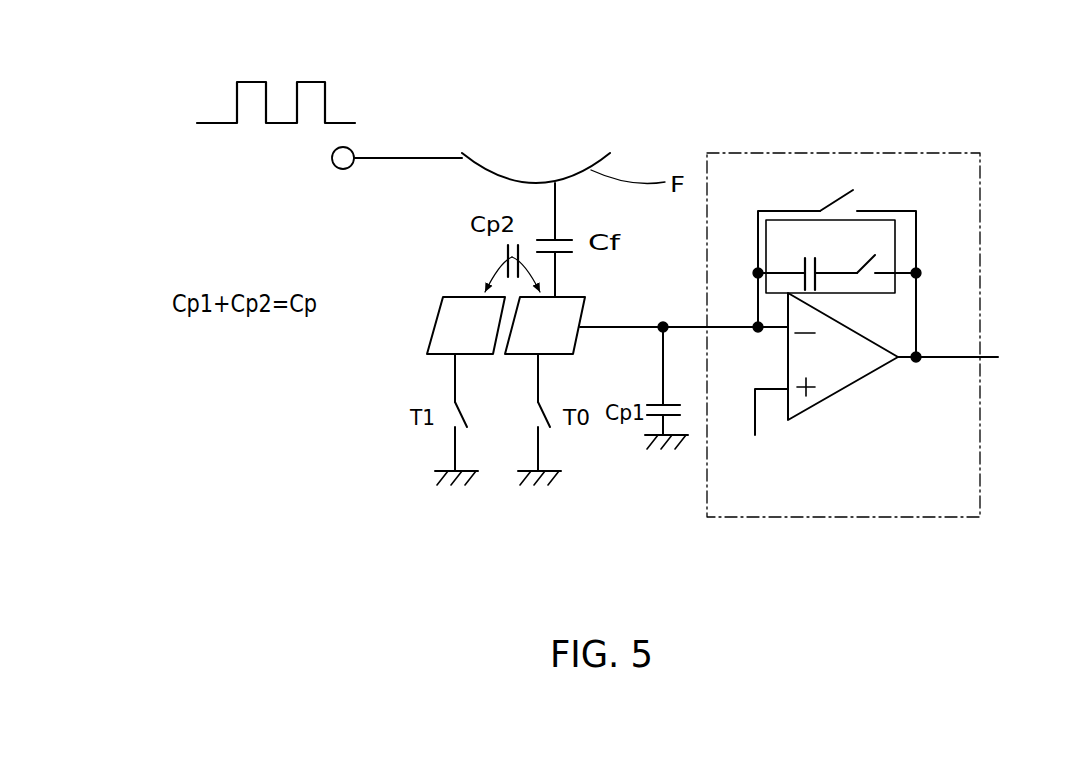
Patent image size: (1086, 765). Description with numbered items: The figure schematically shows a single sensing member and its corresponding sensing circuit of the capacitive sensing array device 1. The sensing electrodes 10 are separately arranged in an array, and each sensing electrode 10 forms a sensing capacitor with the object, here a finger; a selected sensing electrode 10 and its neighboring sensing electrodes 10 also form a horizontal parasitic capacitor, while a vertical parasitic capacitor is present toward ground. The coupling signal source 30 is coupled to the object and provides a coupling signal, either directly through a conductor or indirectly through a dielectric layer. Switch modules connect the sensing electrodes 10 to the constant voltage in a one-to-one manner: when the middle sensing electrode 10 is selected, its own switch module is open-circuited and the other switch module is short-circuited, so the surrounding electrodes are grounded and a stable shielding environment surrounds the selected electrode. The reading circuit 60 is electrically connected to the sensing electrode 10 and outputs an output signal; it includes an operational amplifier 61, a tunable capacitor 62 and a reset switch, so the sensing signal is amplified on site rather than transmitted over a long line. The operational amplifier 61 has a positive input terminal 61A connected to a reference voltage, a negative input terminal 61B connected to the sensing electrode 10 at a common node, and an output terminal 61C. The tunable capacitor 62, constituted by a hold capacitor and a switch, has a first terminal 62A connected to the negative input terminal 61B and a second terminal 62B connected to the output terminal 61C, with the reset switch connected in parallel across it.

The capacitive sensing array device 1 is at (835, 79).
The sensing electrode 10 is at (443, 318).
The coupling signal source 30 is at (216, 158).
The reading circuit 60 is at (982, 202).
The operational amplifier 61 is at (860, 380).
The positive input terminal 61A is at (803, 403).
The negative input terminal 61B is at (817, 340).
The output terminal 61C is at (887, 362).
The tunable capacitor 62 is at (897, 253).
The first terminal 62A is at (757, 267).
The second terminal 62B is at (918, 277).